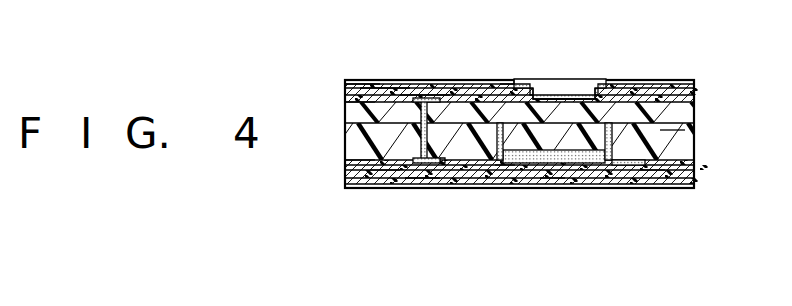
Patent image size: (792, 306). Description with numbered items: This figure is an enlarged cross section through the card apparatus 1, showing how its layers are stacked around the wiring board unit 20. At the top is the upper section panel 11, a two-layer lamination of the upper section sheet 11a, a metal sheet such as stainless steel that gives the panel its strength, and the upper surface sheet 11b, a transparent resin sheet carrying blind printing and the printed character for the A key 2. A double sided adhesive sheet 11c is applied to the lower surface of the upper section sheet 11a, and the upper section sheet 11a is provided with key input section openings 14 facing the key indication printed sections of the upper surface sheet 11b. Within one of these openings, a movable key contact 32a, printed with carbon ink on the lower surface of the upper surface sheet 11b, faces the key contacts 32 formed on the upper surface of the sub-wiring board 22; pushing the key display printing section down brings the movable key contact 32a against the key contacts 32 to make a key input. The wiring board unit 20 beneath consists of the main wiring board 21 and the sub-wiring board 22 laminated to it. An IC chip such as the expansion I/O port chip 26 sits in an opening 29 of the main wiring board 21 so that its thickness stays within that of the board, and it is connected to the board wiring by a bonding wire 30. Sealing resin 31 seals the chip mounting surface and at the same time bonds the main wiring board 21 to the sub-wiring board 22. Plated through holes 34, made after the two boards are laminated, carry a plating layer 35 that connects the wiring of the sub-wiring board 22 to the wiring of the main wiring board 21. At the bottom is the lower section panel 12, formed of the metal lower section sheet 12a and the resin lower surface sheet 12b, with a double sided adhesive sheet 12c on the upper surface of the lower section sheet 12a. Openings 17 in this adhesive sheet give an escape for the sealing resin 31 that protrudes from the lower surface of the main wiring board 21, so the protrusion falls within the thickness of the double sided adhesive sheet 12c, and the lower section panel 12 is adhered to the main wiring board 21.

The card apparatus 1 is at (693, 78).
The A key 2 is at (593, 79).
The upper section panel 11 is at (464, 78).
The upper section sheet 11a is at (427, 92).
The upper surface sheet 11b is at (378, 86).
The double sided adhesive sheet 11c is at (357, 82).
The lower section panel 12 is at (431, 191).
The lower section sheet 12a is at (505, 166).
The lower surface sheet 12b is at (553, 179).
The double sided adhesive sheet 12c is at (463, 163).
The key input section openings 14 is at (524, 88).
The openings 17 is at (645, 172).
The wiring board unit 20 is at (699, 117).
The main wiring board 21 is at (346, 150).
The sub-wiring board 22 is at (345, 113).
The expansion I/O port chip 26 is at (606, 152).
The opening 29 is at (668, 140).
The bonding wire 30 is at (628, 167).
The sealing resin 31 is at (578, 163).
The key contacts 32 is at (552, 88).
The movable key contact 32a is at (573, 88).
The through holes 34 is at (423, 168).
The plating layer 35 is at (387, 162).